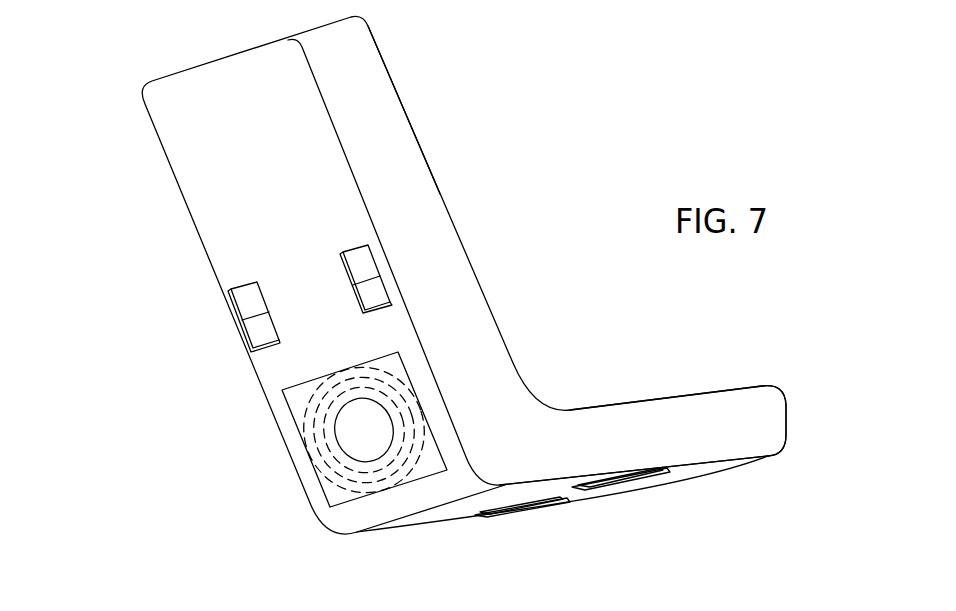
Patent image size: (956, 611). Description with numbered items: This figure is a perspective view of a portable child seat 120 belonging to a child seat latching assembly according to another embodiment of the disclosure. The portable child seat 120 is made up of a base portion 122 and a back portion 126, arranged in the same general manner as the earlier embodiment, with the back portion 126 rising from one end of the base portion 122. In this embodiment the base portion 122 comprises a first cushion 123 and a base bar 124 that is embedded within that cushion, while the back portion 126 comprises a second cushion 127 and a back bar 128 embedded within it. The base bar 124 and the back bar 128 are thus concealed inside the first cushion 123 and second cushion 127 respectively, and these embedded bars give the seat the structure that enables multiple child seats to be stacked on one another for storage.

The portable child seat 120 is at (138, 53).
The base portion 122 is at (695, 394).
The first cushion 123 is at (747, 410).
The base bar 124 is at (512, 512).
The back portion 126 is at (377, 75).
The second cushion 127 is at (383, 128).
The back bar 128 is at (250, 319).